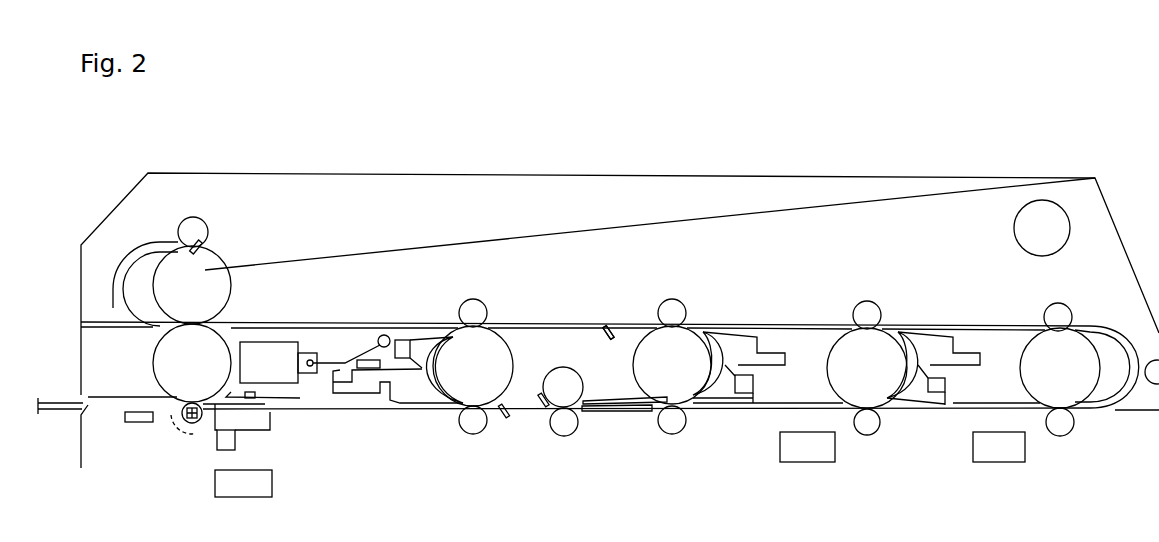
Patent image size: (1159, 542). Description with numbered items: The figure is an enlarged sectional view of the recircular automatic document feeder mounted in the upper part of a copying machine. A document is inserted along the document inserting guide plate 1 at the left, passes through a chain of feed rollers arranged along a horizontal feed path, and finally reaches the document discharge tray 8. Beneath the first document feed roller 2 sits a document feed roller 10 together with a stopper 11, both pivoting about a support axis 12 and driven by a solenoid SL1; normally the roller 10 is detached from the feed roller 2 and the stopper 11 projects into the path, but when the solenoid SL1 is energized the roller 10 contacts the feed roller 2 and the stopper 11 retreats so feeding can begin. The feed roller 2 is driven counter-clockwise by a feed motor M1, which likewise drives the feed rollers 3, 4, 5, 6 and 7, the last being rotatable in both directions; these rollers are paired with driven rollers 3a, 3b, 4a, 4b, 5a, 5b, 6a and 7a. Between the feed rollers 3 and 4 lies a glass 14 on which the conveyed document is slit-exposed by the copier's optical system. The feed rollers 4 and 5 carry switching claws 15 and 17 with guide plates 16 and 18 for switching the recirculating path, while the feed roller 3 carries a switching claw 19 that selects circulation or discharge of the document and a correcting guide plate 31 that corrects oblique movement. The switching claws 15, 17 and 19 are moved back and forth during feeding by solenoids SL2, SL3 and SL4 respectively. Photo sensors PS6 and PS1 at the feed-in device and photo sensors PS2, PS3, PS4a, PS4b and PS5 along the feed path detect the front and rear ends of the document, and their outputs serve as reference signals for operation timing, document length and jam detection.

The document inserting guide plate 1 is at (60, 400).
The document feed roller 2 is at (153, 355).
The feed roller 3 is at (513, 358).
The driven roller 3a is at (470, 435).
The driven roller 3b is at (483, 302).
The feed roller 4 is at (633, 357).
The driven roller 4a is at (672, 435).
The driven roller 4b is at (688, 310).
The feed roller 5 is at (827, 373).
The driven roller 5a is at (867, 436).
The driven roller 5b is at (867, 300).
The feed roller 6 is at (1100, 370).
The driven roller 6a is at (1066, 307).
The feed roller 7 is at (233, 296).
The driven roller 7a is at (207, 222).
The document discharge tray 8 is at (378, 250).
The document feed roller 10 is at (180, 422).
The stopper 11 is at (266, 412).
The support axis 12 is at (217, 447).
The glass 14 is at (625, 412).
The switching claw 15 is at (728, 404).
The guide plate 16 is at (725, 337).
The switching claw 17 is at (923, 398).
The guide plate 18 is at (918, 337).
The switching claw 19 is at (427, 340).
The correcting guide plate 31 is at (422, 395).
The photo sensor PS1 is at (253, 393).
The photo sensor PS2 is at (506, 421).
The photo sensor PS3 is at (544, 409).
The photo sensor PS4a is at (612, 317).
The photo sensor PS4b is at (608, 333).
The photo sensor PS5 is at (212, 255).
The photo sensor PS6 is at (138, 423).
The solenoid SL1 is at (243, 483).
The solenoid SL2 is at (807, 447).
The solenoid SL3 is at (999, 447).
The solenoid SL4 is at (315, 359).
The feed motor M1 is at (1042, 228).